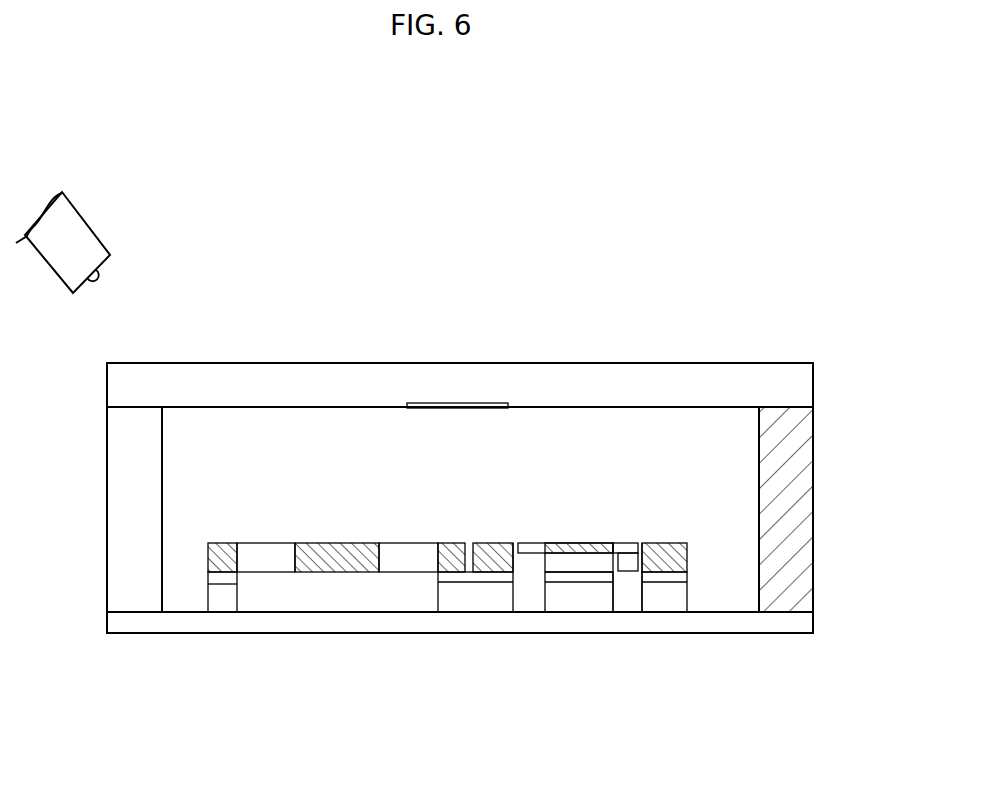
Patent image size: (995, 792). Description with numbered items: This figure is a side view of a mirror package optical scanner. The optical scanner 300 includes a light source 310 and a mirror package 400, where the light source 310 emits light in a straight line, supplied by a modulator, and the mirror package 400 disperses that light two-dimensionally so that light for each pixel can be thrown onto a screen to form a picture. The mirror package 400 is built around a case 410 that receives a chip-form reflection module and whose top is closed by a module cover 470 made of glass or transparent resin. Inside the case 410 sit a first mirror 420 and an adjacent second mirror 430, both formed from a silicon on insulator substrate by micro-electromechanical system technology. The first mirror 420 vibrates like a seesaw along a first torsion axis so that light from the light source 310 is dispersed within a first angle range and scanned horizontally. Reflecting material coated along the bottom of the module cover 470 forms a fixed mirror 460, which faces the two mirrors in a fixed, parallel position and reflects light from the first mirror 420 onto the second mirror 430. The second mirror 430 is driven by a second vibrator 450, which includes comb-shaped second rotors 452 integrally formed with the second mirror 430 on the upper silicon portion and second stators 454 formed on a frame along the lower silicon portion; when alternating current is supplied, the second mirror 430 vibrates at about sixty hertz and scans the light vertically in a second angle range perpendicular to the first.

The optical scanner 300 is at (141, 138).
The light source 310 is at (83, 221).
The mirror package 400 is at (507, 487).
The case 410 is at (802, 477).
The first mirror 420 is at (328, 543).
The second mirror 430 is at (588, 541).
The second vibrator 450 is at (627, 592).
The second rotors 452 is at (620, 542).
The second stators 454 is at (632, 560).
The fixed mirror 460 is at (463, 407).
The module cover 470 is at (322, 382).